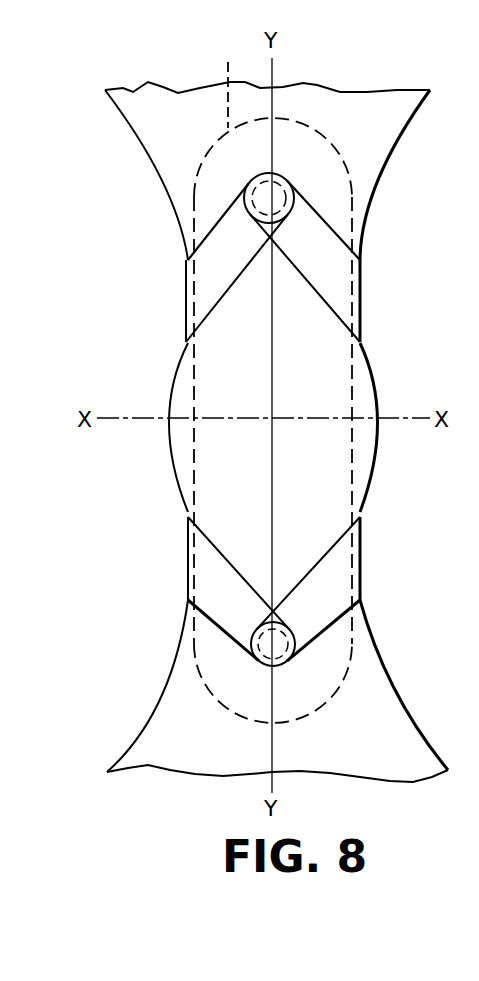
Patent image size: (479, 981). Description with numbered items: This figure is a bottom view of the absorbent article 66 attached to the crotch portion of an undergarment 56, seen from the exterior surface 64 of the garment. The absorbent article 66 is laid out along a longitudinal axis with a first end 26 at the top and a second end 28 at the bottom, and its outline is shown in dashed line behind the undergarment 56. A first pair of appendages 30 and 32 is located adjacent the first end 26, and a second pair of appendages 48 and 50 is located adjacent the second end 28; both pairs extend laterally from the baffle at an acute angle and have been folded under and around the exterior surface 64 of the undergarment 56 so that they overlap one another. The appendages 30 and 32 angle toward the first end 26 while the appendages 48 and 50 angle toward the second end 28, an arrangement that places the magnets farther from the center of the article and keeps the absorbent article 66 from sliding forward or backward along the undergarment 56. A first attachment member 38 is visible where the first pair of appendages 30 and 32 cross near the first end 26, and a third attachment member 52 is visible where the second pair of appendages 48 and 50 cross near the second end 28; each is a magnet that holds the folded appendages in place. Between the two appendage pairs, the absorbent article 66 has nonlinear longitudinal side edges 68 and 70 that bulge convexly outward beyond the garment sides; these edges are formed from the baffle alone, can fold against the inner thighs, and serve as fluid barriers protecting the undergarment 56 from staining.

The first end 26 is at (228, 62).
The second end 28 is at (238, 729).
The first appendage 30 is at (333, 273).
The second appendage 32 is at (213, 268).
The first attachment member 38 is at (251, 184).
The second-pair appendage 48 is at (345, 571).
The second-pair appendage 50 is at (208, 570).
The third attachment member 52 is at (251, 669).
The undergarment 56 is at (397, 102).
The exterior surface 64 is at (387, 713).
The absorbent article 66 is at (315, 130).
The nonlinear longitudinal side edge 68 is at (375, 386).
The nonlinear longitudinal side edge 70 is at (173, 382).